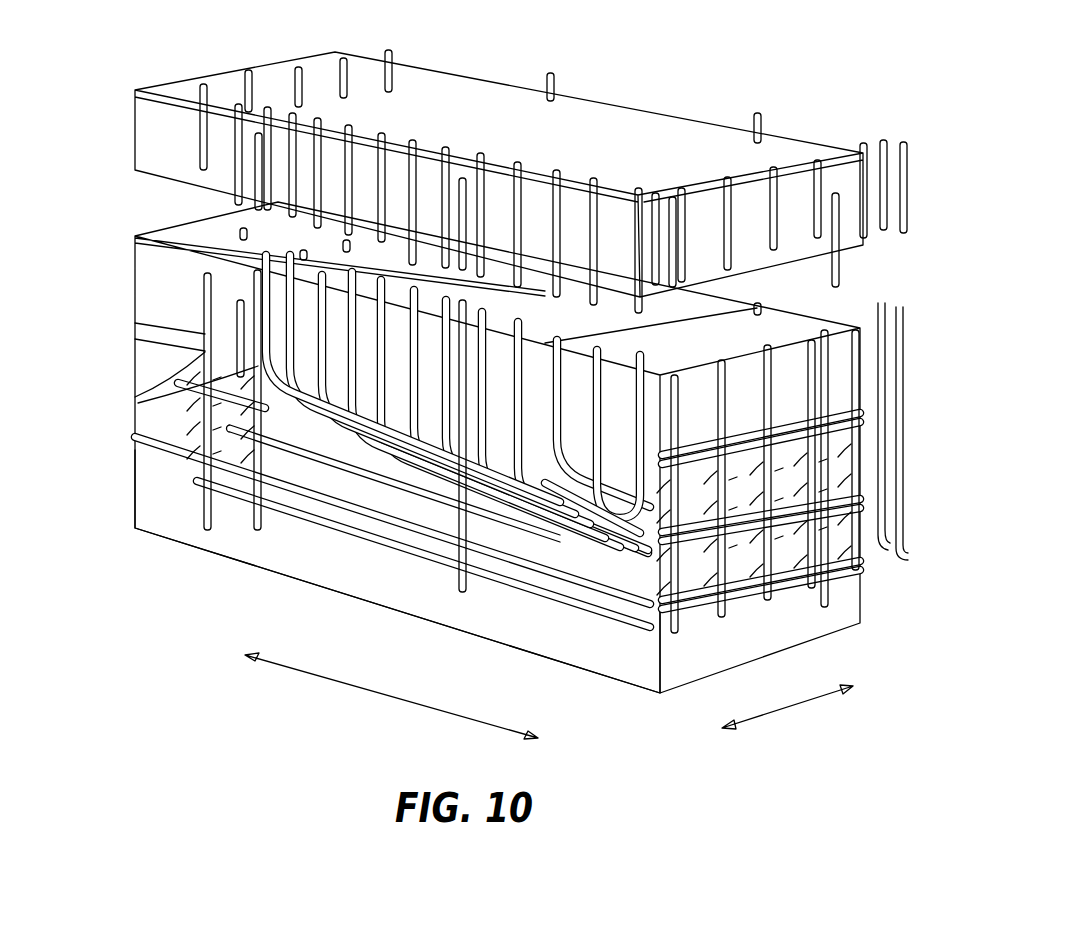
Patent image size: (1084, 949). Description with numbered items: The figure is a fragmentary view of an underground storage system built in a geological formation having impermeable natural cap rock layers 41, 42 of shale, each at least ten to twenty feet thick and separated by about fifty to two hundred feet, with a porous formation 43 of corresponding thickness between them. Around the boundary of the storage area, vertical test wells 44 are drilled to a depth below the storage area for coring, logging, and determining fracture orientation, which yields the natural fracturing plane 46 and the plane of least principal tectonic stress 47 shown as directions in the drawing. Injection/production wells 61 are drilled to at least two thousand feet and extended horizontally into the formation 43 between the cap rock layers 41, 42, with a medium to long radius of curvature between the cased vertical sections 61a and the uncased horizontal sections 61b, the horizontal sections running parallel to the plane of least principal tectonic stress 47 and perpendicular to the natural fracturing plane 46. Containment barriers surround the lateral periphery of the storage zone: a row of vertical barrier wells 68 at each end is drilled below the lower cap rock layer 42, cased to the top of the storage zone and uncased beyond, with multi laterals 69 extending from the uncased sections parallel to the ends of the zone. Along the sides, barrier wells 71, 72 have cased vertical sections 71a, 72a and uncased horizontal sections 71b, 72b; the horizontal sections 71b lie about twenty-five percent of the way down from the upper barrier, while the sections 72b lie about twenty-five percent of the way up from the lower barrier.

The upper cap rock layer 41 is at (136, 322).
The lower cap rock layer 42 is at (150, 460).
The porous formation 43 is at (150, 418).
The vertical test wells 44 is at (553, 73).
The natural fracturing plane 46 is at (415, 700).
The plane of least principal tectonic stress 47 is at (800, 700).
The injection/production wells 61 is at (487, 157).
The vertical sections 61a is at (625, 545).
The horizontal sections 61b is at (786, 570).
The vertical barrier wells 68 is at (203, 84).
The multi laterals 69 is at (135, 397).
The barrier wells 71 is at (655, 193).
The cased vertical sections 71a is at (865, 345).
The uncased horizontal sections 71b is at (292, 470).
The barrier wells 72 is at (903, 142).
The cased vertical sections 72a is at (920, 283).
The uncased horizontal sections 72b is at (215, 490).